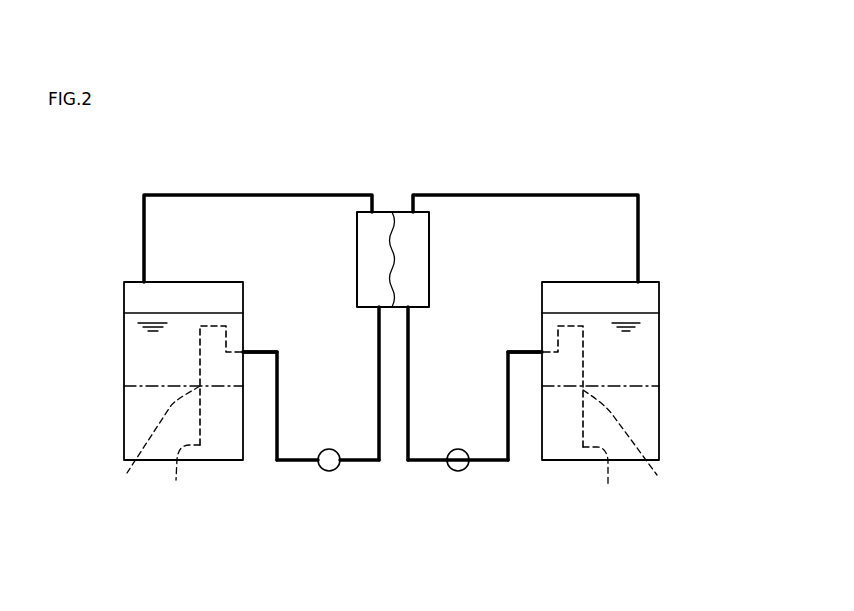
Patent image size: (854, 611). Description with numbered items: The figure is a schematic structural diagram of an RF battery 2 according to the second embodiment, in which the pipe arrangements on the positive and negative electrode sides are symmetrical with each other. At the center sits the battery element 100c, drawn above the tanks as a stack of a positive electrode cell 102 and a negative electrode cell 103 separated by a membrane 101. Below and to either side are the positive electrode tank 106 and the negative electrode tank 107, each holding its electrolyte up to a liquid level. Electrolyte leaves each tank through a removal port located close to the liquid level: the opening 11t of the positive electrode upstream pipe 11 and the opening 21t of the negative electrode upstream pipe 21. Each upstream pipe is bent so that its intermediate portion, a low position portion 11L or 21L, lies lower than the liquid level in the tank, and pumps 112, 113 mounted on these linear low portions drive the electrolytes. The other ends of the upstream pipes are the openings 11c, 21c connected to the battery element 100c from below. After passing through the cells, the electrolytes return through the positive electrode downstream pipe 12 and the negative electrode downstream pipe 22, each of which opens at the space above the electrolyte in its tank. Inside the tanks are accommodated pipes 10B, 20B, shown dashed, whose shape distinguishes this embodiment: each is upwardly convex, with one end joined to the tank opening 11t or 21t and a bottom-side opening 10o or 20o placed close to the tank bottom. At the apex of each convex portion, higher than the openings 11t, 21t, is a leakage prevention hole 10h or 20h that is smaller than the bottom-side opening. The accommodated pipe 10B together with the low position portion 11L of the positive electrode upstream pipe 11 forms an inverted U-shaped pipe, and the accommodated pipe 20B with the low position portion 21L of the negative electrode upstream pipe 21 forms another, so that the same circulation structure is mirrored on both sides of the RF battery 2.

The RF battery 2 is at (655, 263).
The positive electrode downstream pipe 12 is at (236, 195).
The negative electrode downstream pipe 22 is at (520, 195).
The battery element 100c is at (390, 206).
The membrane 101 is at (396, 226).
The positive electrode cell 102 is at (368, 220).
The negative electrode cell 103 is at (415, 220).
The opening to battery element 11c is at (368, 323).
The opening to battery element 21c is at (418, 323).
The positive electrode upstream pipe 11 is at (277, 413).
The negative electrode upstream pipe 21 is at (508, 413).
The opening to positive electrode tank 11t is at (246, 349).
The opening to negative electrode tank 21t is at (541, 350).
The low position portion 11L is at (305, 463).
The low position portion 21L is at (497, 465).
The pump 112 is at (338, 467).
The pump 113 is at (447, 467).
The positive electrode tank 106 is at (124, 405).
The negative electrode tank 107 is at (659, 405).
The leakage prevention hole 10h is at (212, 326).
The leakage prevention hole 20h is at (572, 326).
The accommodated pipe 10B is at (154, 442).
The accommodated pipe 20B is at (630, 447).
The bottom-side opening 10o is at (179, 476).
The bottom-side opening 20o is at (605, 478).